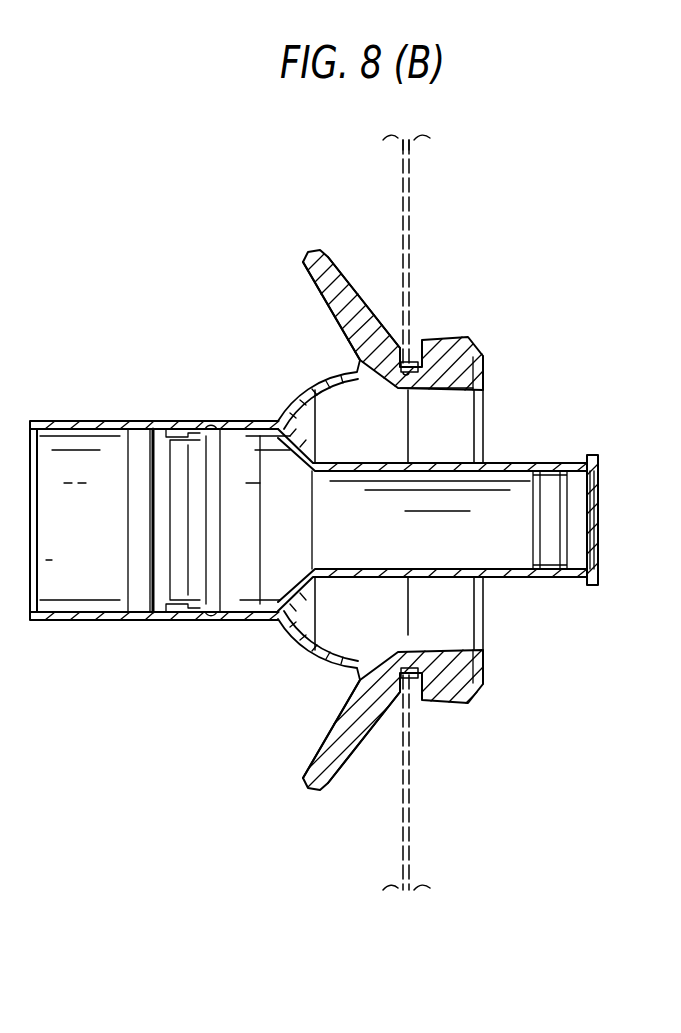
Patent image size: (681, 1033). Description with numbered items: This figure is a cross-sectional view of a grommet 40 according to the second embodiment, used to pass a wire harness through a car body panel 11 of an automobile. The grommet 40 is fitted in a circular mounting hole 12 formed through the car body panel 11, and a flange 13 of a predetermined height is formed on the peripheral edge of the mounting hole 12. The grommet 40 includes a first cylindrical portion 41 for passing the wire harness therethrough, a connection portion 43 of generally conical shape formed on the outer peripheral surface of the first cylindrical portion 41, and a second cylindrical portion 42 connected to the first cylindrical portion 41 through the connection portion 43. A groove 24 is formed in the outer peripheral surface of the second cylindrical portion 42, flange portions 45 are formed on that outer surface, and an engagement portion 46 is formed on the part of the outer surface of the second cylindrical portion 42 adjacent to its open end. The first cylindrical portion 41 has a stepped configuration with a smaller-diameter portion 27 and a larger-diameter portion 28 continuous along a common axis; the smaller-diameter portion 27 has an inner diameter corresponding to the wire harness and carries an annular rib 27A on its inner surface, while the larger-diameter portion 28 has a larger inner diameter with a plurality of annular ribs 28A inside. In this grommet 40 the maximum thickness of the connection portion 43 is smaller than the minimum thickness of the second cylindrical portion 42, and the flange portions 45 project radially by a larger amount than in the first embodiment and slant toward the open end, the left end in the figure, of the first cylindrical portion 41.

The grommet 40 is at (576, 262).
The car body panel 11 is at (410, 196).
The mounting hole 12 is at (388, 390).
The flange 13 is at (418, 336).
The groove 24 is at (417, 692).
The smaller-diameter portion 27 is at (517, 580).
The annular rib 27A is at (568, 520).
The larger-diameter portion 28 is at (78, 622).
The annular ribs 28A is at (183, 572).
The first cylindrical portion 41 is at (168, 622).
The second cylindrical portion 42 is at (470, 337).
The connection portion 43 is at (300, 393).
The flange portions 45 is at (312, 275).
The engagement portion 46 is at (468, 690).